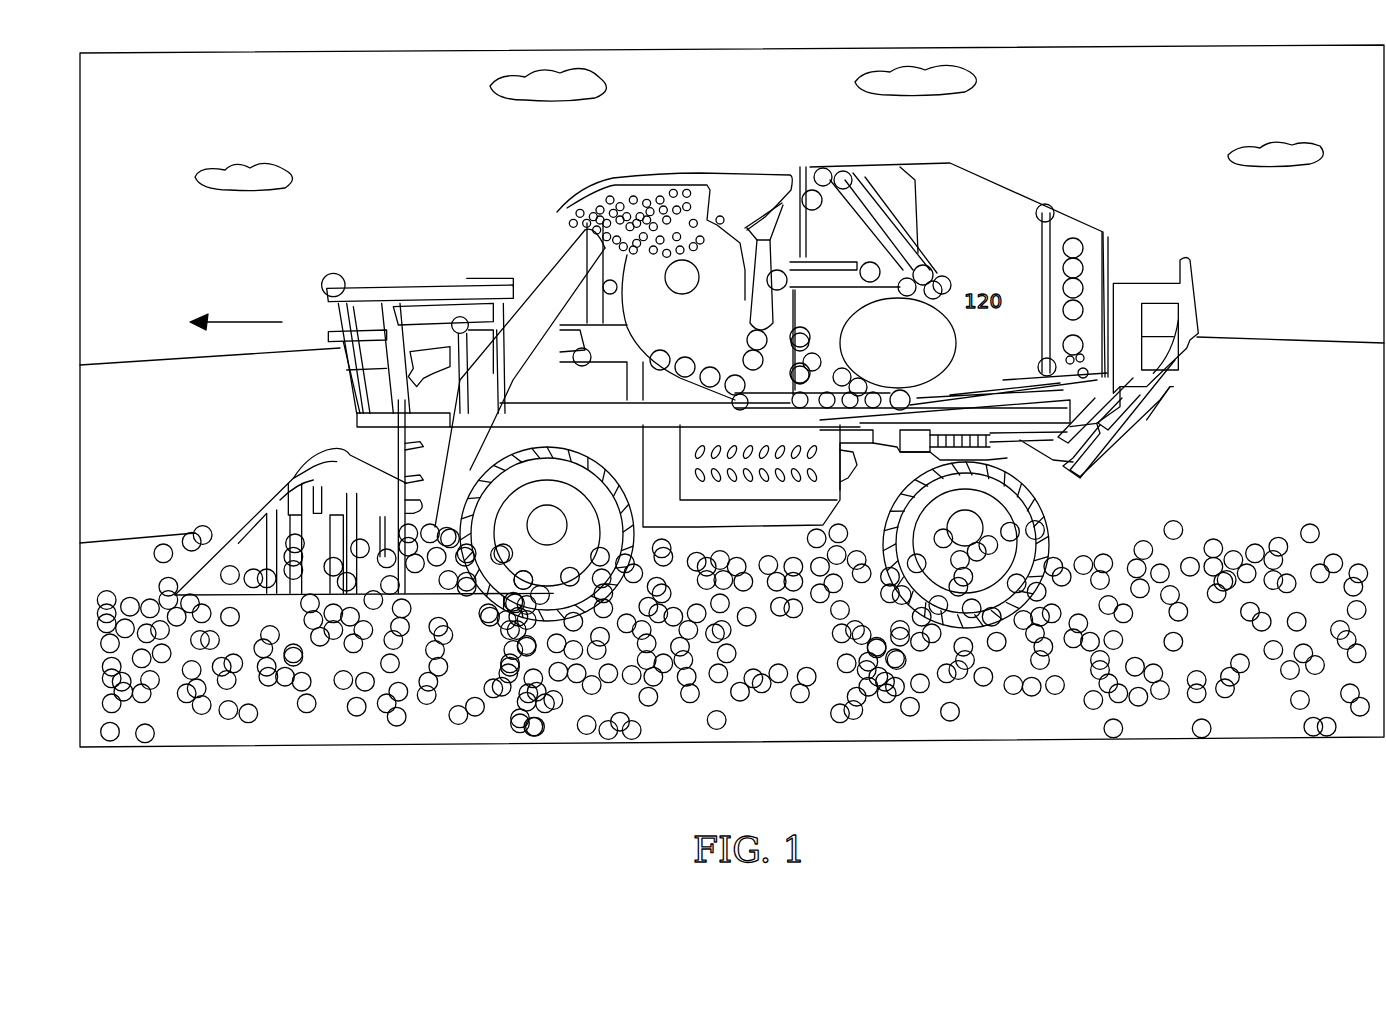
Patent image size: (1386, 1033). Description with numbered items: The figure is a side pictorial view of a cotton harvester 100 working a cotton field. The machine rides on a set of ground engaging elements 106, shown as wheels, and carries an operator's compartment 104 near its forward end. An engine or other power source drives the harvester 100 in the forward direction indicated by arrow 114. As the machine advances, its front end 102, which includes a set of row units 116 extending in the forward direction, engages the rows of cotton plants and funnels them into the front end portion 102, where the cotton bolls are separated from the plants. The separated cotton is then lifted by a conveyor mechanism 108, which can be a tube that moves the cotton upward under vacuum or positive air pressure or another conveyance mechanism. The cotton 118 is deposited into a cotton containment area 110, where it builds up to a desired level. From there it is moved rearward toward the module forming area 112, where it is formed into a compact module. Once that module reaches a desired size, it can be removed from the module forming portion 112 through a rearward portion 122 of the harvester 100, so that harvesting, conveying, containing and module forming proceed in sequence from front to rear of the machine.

The cotton harvester 100 is at (975, 170).
The front end 102 is at (195, 540).
The operator's compartment 104 is at (420, 283).
The ground engaging elements 106 is at (547, 525).
The conveyor mechanism 108 is at (538, 248).
The cotton containment area 110 is at (712, 240).
The module forming area 112 is at (1010, 225).
The arrow 114 is at (243, 320).
The row units 116 is at (180, 572).
The cotton 118 is at (650, 210).
The rearward portion 122 is at (1118, 287).